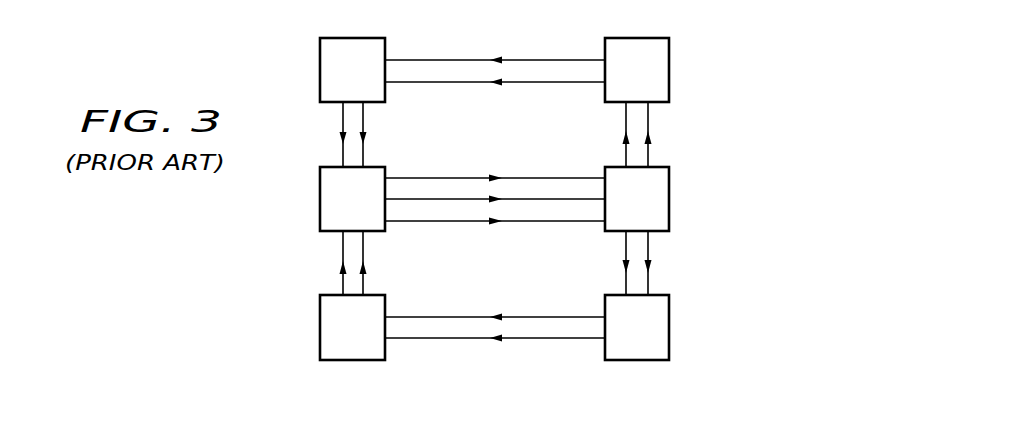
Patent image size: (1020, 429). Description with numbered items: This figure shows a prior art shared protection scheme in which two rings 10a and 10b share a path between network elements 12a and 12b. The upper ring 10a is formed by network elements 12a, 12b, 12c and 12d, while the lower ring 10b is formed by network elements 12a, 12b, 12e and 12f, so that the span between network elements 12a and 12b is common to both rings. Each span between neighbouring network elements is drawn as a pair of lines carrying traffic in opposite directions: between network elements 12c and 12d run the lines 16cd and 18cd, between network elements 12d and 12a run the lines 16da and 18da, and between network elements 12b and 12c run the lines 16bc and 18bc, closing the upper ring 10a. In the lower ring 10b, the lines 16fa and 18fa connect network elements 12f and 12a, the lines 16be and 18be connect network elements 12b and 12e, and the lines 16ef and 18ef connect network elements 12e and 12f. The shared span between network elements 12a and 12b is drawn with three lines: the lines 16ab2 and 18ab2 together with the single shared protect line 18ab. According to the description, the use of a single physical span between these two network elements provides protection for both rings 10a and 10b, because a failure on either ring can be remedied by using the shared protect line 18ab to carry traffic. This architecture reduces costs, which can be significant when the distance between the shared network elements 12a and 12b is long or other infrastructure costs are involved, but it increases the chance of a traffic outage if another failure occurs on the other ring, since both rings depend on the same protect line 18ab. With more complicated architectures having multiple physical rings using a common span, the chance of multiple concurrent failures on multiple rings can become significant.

The ring 10a is at (513, 142).
The ring 10b is at (513, 278).
The network element 12a is at (320, 200).
The network element 12b is at (669, 200).
The network element 12c is at (669, 72).
The network element 12d is at (320, 72).
The network element 12e is at (669, 329).
The network element 12f is at (320, 329).
The working fiber link between 12c and 12d 16cd is at (556, 82).
The protection fiber link between 12c and 12d 18cd is at (438, 60).
The working fiber link between 12d and 12a 16da is at (363, 120).
The protection fiber link between 12d and 12a 18da is at (343, 127).
The working fiber link between 12b and 12c 16bc is at (626, 120).
The protection fiber link between 12b and 12c 18bc is at (648, 118).
The second working fiber link between 12a and 12b 16ab2 is at (438, 221).
The second protection fiber link between 12a and 12b 18ab2 is at (438, 178).
The shared protect line 18ab is at (552, 200).
The working fiber link between 12f and 12a 16fa is at (363, 283).
The protection fiber link between 12f and 12a 18fa is at (343, 242).
The working fiber link between 12b and 12e 16be is at (626, 281).
The protection fiber link between 12b and 12e 18be is at (648, 242).
The working fiber link between 12e and 12f 16ef is at (558, 317).
The protection fiber link between 12e and 12f 18ef is at (450, 338).